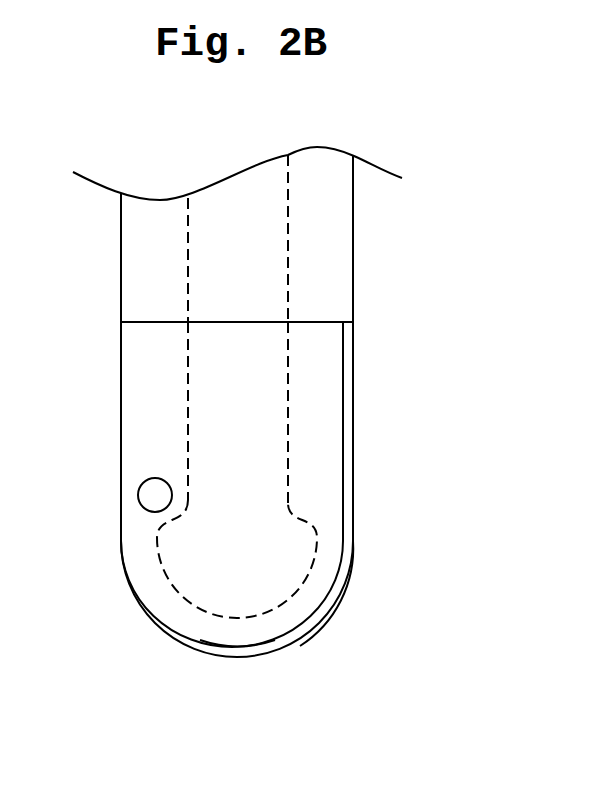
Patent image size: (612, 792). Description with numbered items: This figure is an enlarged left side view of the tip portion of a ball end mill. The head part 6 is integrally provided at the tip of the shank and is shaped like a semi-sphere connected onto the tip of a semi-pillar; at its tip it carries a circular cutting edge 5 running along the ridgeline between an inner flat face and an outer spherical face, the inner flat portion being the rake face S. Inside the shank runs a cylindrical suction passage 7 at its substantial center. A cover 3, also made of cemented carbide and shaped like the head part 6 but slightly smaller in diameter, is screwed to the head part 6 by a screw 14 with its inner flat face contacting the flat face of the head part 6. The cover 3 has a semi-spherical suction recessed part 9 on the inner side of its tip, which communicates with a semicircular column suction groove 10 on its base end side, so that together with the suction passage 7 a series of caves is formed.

The cover 3 is at (140, 425).
The cutting edge 5 is at (337, 603).
The head part 6 is at (217, 655).
The suction passage 7 is at (288, 230).
The suction recessed part 9 is at (177, 598).
The suction groove 10 is at (285, 403).
The screw 14 is at (153, 495).
The rake face S is at (268, 647).